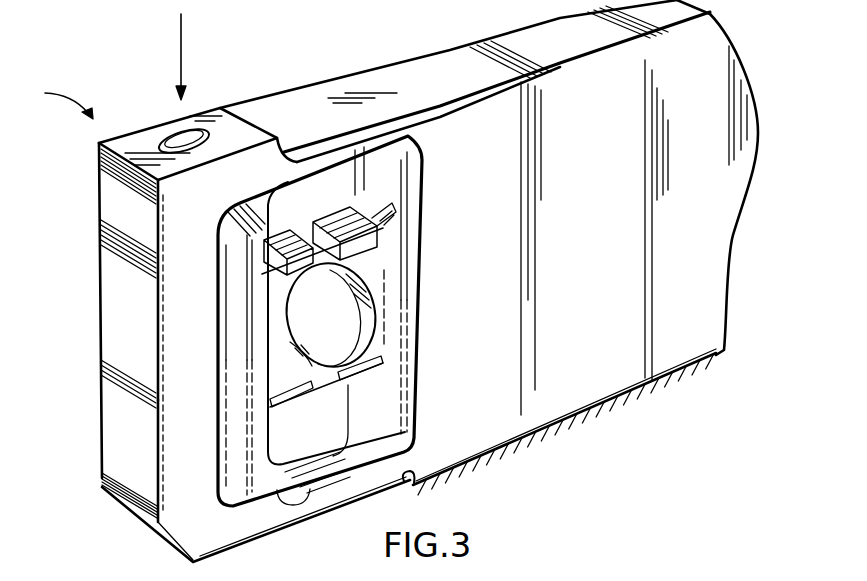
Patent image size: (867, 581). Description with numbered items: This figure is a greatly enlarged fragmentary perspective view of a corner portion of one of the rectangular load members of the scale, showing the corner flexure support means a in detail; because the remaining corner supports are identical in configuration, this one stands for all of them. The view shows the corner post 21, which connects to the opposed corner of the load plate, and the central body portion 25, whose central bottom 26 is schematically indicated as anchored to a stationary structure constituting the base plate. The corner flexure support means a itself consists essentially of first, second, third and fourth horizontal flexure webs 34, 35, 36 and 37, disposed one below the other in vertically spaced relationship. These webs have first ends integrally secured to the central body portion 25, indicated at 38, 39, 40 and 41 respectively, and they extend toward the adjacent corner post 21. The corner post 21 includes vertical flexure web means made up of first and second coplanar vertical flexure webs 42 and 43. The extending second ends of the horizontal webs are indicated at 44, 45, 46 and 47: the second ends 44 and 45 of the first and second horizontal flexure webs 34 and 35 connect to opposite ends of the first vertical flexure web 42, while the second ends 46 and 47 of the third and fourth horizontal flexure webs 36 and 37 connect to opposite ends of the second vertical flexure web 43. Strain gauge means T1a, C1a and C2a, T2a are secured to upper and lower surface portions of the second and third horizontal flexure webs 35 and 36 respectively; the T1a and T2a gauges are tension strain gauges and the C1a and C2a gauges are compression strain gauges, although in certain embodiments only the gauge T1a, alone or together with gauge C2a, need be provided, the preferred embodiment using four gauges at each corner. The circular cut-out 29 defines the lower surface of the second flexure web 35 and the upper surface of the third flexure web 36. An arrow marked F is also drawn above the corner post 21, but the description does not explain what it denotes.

The corner post 21 is at (222, 110).
The central body portion 25 is at (692, 205).
The central bottom 26 is at (532, 440).
The circular cut-out 29 is at (382, 325).
The first horizontal flexure web 34 is at (331, 151).
The second horizontal flexure web 35 is at (336, 281).
The third horizontal flexure web 36 is at (333, 362).
The fourth horizontal flexure web 37 is at (343, 490).
The first end of first horizontal flexure web 38 is at (413, 123).
The first end of second horizontal flexure web 39 is at (383, 244).
The first end of third horizontal flexure web 40 is at (380, 342).
The first end of fourth horizontal flexure web 41 is at (404, 489).
The first vertical flexure web 42 is at (258, 243).
The second vertical flexure web 43 is at (252, 427).
The second end of first horizontal flexure web 44 is at (262, 214).
The second end of second horizontal flexure web 45 is at (262, 290).
The second end of third horizontal flexure web 46 is at (266, 387).
The second end of fourth horizontal flexure web 47 is at (257, 493).
The compression strain gauge C1a is at (262, 240).
The tension strain gauge T1a is at (378, 230).
The compression strain gauge C2a is at (352, 380).
The tension strain gauge T2a is at (290, 407).
The force direction F is at (188, 50).
The corner flexure support means a is at (60, 100).